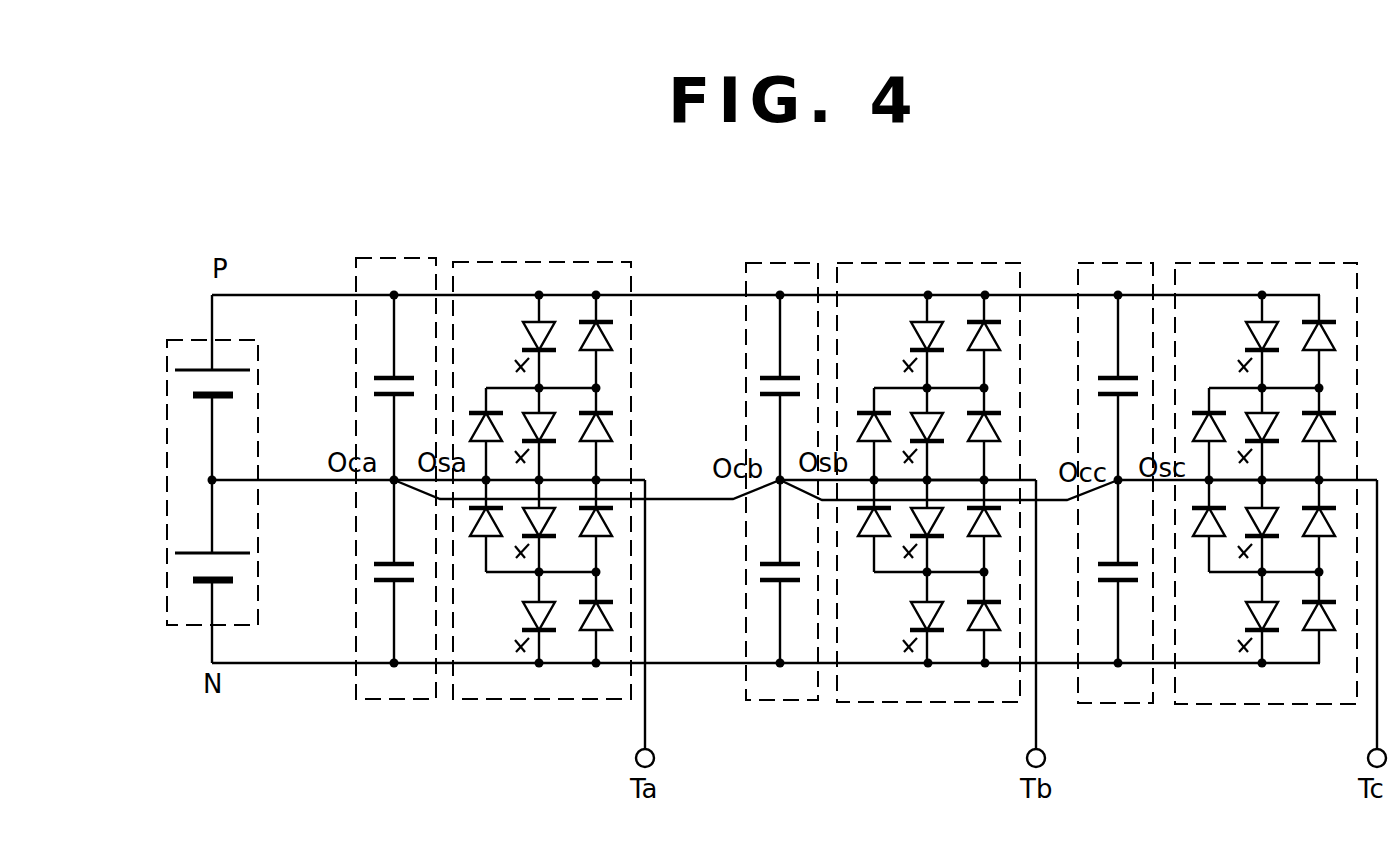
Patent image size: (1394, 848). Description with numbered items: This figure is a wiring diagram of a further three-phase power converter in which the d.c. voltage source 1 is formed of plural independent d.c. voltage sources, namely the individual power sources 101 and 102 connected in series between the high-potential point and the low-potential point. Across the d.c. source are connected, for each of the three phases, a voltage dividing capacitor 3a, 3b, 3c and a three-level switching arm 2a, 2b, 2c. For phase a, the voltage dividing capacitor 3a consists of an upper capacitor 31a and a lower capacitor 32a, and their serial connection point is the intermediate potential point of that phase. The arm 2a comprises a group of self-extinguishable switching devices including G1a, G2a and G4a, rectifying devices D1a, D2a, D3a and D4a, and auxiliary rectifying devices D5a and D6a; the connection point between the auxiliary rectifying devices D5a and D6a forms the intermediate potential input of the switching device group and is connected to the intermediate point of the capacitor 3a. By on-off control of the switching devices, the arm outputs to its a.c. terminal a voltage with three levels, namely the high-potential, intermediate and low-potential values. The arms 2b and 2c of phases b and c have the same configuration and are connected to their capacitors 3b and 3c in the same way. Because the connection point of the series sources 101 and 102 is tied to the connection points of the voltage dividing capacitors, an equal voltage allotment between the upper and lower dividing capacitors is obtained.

The d.c. voltage source 1 is at (181, 339).
The individual power source 101 is at (195, 396).
The individual power source 102 is at (195, 579).
The voltage dividing capacitor 3a is at (354, 444).
The voltage dividing capacitor 3b is at (790, 263).
The voltage dividing capacitor 3c is at (1118, 263).
The 3-level switching arm 2a is at (494, 444).
The 3-level switching arm 2b is at (935, 263).
The 3-level switching arm 2c is at (1268, 263).
The capacitor 31a is at (373, 385).
The capacitor 32a is at (373, 570).
The switching device G1a is at (509, 337).
The switching device G2a is at (550, 418).
The switching device G4a is at (505, 628).
The rectifying device D1a is at (608, 340).
The rectifying device D2a is at (608, 436).
The rectifying device D3a is at (608, 528).
The rectifying device D4a is at (608, 626).
The auxiliary rectifying device D5a is at (470, 428).
The auxiliary rectifying device D6a is at (470, 527).